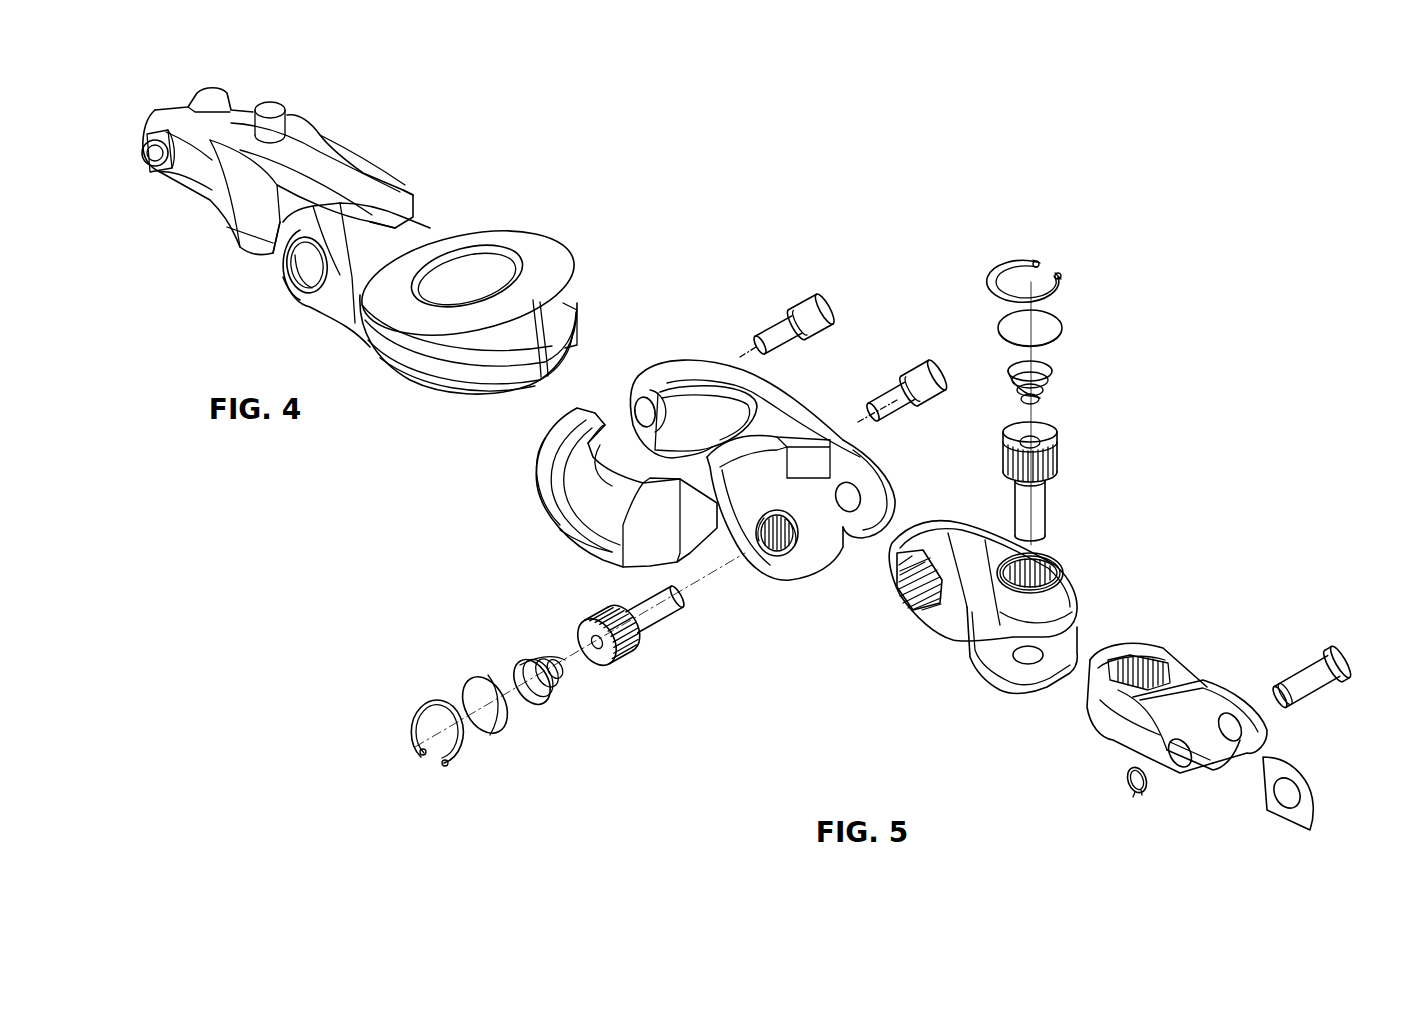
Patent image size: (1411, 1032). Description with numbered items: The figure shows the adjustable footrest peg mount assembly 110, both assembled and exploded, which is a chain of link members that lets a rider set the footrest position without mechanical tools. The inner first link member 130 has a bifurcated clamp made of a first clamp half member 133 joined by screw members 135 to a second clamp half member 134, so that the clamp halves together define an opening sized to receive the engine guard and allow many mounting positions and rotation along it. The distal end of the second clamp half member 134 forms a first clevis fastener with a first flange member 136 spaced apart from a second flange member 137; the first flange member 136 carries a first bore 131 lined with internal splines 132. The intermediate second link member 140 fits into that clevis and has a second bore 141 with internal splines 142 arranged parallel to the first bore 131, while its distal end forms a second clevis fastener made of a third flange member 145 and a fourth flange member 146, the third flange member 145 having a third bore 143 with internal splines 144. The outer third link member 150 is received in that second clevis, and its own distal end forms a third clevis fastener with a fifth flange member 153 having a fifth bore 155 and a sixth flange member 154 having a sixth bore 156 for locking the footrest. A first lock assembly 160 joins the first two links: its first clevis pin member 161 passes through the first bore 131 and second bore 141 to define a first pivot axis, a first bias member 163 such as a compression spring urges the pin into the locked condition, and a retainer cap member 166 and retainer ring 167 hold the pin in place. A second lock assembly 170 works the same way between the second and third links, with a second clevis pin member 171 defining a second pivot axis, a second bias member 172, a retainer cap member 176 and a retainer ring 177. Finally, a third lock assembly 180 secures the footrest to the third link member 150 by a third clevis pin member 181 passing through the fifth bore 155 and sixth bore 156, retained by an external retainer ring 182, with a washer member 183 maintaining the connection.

In FIG. 4, the adjustable footrest peg mount assembly 110 is at (200, 65).
In FIG. 5, the adjustable footrest peg mount assembly 110 is at (1274, 260).
In FIG. 4, the first link member 130 is at (510, 232).
In FIG. 5, the first link member 130 is at (507, 482).
In FIG. 5, the first bore 131 is at (775, 537).
In FIG. 5, the internal splines 132 is at (793, 553).
In FIG. 5, the first clamp half member 133 is at (554, 500).
In FIG. 5, the second clamp half member 134 is at (705, 366).
In FIG. 5, the screw members 135 is at (812, 303).
In FIG. 5, the first flange member 136 is at (811, 562).
In FIG. 5, the second flange member 137 is at (878, 477).
In FIG. 4, the second link member 140 is at (325, 160).
In FIG. 5, the second link member 140 is at (1132, 493).
In FIG. 5, the second bore 141 is at (907, 597).
In FIG. 5, the internal splines 142 is at (930, 607).
In FIG. 5, the third bore 143 is at (1013, 593).
In FIG. 5, the internal splines 144 is at (1047, 573).
In FIG. 5, the third flange member 145 is at (1077, 617).
In FIG. 5, the fourth flange member 146 is at (985, 667).
In FIG. 4, the third link member 150 is at (228, 112).
In FIG. 5, the third link member 150 is at (1256, 570).
In FIG. 5, the fifth flange member 153 is at (1207, 768).
In FIG. 5, the sixth flange member 154 is at (1247, 750).
In FIG. 5, the fifth bore 155 is at (1232, 735).
In FIG. 5, the sixth bore 156 is at (1180, 767).
In FIG. 5, the first lock assembly 160 is at (477, 647).
In FIG. 5, the first clevis pin member 161 is at (660, 617).
In FIG. 5, the first bias member 163 is at (552, 690).
In FIG. 5, the retainer cap member 166 is at (502, 720).
In FIG. 5, the retainer ring 167 is at (447, 768).
In FIG. 5, the second lock assembly 170 is at (990, 260).
In FIG. 5, the second clevis pin member 171 is at (1056, 435).
In FIG. 5, the second bias member 172 is at (1046, 393).
In FIG. 5, the retainer cap member 176 is at (1062, 333).
In FIG. 5, the retainer ring 177 is at (1051, 279).
In FIG. 5, the third lock assembly 180 is at (1337, 737).
In FIG. 5, the third clevis pin member 181 is at (1352, 648).
In FIG. 5, the external retainer ring 182 is at (1125, 777).
In FIG. 5, the washer member 183 is at (1275, 808).